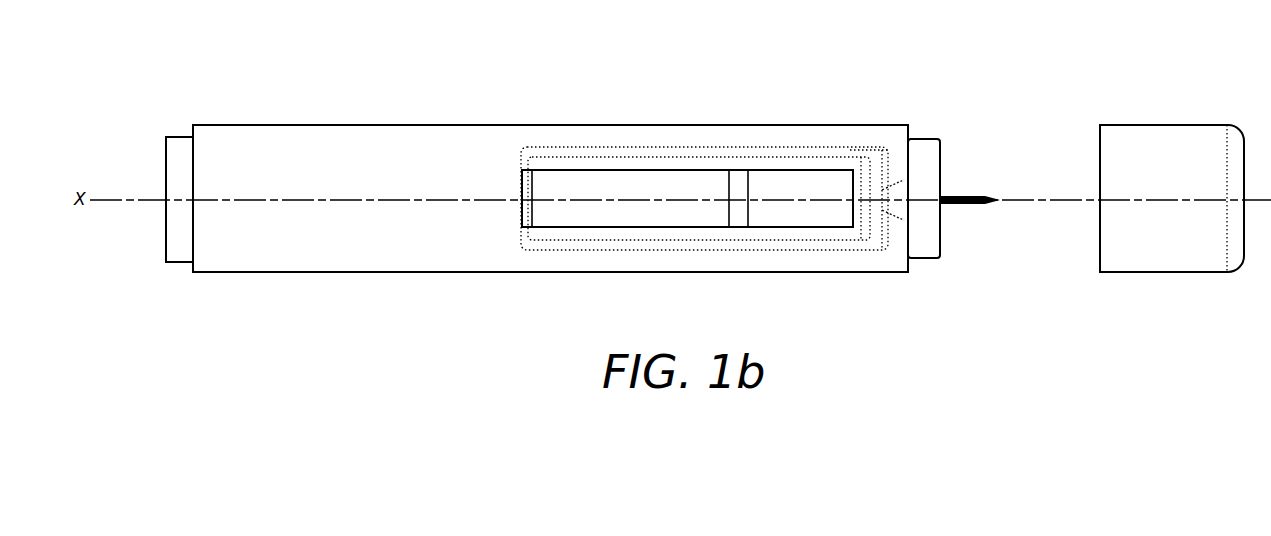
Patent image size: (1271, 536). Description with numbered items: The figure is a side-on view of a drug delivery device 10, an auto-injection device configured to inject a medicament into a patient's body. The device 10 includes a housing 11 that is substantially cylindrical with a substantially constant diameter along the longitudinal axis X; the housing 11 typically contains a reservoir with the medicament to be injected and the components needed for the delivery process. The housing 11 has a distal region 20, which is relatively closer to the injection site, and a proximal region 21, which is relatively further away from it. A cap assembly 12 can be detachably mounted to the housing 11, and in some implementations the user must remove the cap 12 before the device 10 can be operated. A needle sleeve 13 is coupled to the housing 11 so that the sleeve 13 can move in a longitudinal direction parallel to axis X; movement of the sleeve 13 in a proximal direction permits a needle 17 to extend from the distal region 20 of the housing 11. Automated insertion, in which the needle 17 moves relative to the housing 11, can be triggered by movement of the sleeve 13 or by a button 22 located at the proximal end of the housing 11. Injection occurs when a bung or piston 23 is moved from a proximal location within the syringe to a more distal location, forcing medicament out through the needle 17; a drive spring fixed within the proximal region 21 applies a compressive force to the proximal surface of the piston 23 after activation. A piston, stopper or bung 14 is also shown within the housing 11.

The drug delivery device 10 is at (872, 80).
The housing 11 is at (733, 133).
The cap assembly 12 is at (1165, 132).
The needle sleeve 13 is at (931, 143).
The piston, stopper or bung 14 is at (550, 250).
The needle 17 is at (975, 192).
The distal region 20 is at (890, 262).
The proximal region 21 is at (212, 263).
The button 22 is at (178, 255).
The piston 23 is at (748, 228).